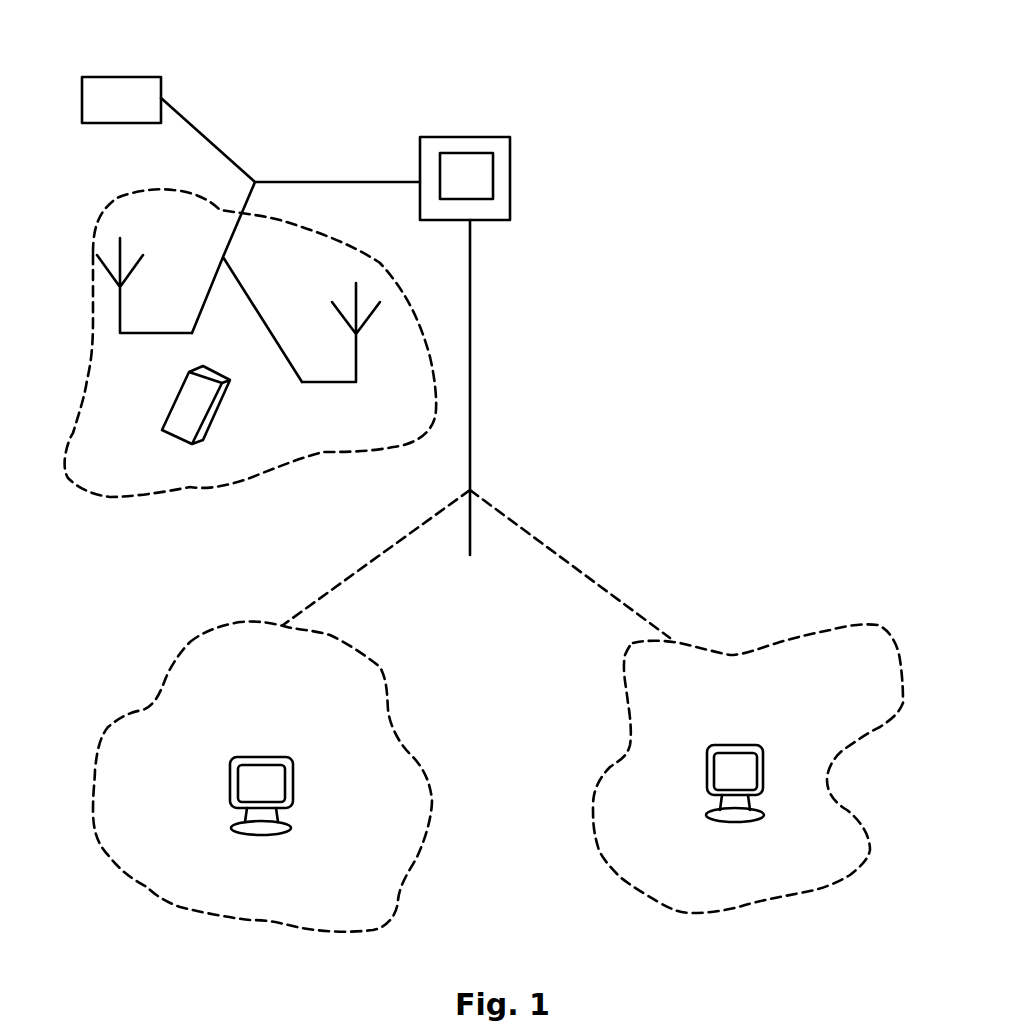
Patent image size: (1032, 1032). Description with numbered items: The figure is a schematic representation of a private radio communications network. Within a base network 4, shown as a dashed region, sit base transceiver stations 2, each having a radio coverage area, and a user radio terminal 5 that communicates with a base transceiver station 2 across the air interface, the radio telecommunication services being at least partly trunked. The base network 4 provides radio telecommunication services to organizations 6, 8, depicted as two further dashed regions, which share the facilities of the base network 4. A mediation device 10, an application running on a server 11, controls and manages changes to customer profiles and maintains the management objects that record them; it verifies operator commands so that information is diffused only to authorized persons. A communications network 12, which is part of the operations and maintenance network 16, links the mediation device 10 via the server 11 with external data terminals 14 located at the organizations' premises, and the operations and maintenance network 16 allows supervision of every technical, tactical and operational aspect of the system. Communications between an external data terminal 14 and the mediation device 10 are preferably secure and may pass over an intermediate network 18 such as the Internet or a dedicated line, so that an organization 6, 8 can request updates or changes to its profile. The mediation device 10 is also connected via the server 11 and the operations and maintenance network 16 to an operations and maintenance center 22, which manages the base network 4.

The base transceiver station 2 is at (100, 280).
The base network 4 is at (165, 220).
The user radio terminal 5 is at (190, 413).
The organization 6 is at (200, 873).
The organization 8 is at (690, 867).
The mediation device 10 is at (468, 172).
The server 11 is at (502, 172).
The communications network 12 is at (478, 365).
The external data terminal 14 is at (297, 803).
The operations and maintenance network 16 is at (593, 260).
The intermediate network 18 is at (377, 558).
The operations and maintenance center 22 is at (115, 89).